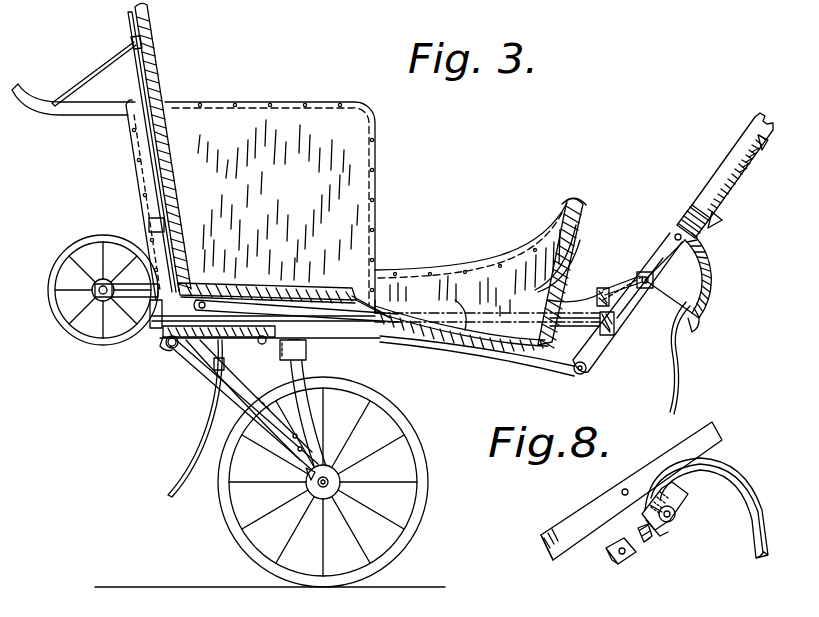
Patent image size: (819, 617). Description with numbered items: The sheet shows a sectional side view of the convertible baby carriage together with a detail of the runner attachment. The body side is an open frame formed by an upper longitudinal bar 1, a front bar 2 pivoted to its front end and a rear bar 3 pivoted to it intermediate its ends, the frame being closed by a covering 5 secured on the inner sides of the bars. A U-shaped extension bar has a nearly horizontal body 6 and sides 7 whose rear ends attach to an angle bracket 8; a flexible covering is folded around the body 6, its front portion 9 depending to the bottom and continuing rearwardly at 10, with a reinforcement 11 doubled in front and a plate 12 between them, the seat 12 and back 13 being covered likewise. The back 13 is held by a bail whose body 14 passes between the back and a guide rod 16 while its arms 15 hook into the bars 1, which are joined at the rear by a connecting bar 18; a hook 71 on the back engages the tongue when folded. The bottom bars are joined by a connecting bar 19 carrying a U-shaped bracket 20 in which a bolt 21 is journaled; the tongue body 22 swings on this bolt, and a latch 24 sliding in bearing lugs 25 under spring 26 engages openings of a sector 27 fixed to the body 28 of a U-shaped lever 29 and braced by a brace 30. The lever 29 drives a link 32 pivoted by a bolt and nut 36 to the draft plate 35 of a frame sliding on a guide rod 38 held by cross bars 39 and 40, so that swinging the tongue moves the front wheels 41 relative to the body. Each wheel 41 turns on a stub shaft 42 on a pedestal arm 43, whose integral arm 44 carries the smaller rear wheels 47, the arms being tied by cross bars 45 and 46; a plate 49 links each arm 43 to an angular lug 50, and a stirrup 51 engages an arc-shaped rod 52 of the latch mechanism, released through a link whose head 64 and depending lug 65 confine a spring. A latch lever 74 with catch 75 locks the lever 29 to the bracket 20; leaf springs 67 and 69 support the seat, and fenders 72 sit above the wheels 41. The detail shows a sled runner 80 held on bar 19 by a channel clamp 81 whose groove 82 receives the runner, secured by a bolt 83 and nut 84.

In FIG. 3, the upper longitudinal bar 1 is at (257, 107).
In FIG. 3, the front bar 2 is at (377, 225).
In FIG. 3, the rear bar 3 is at (143, 162).
In FIG. 3, the covering 5 is at (278, 201).
In FIG. 3, the body of U-shaped bar 6 is at (578, 204).
In FIG. 3, the sides of U-shaped bar 7 is at (420, 270).
In FIG. 3, the angle bracket 8 is at (475, 273).
In FIG. 3, the front portion of covering 9 is at (556, 250).
In FIG. 3, the rearwardly extended covering portion 10 is at (470, 302).
In FIG. 3, the reinforcement 11 is at (578, 272).
In FIG. 3, the seat 12 is at (582, 245).
In FIG. 3, the back 13 is at (151, 57).
In FIG. 3, the body of bail 14 is at (132, 42).
In FIG. 3, the arms of bail 15 is at (92, 76).
In FIG. 3, the guide rod 16 is at (130, 78).
In FIG. 3, the connecting bar 18 is at (25, 85).
In FIG. 3, the connecting bar 19 is at (601, 290).
In FIG. 8, the connecting bar 19 is at (575, 527).
In FIG. 3, the U-shaped bracket 20 is at (708, 283).
In FIG. 3, the bolt 21 is at (650, 292).
In FIG. 3, the tongue body 22 is at (742, 140).
In FIG. 3, the latch 24 is at (728, 205).
In FIG. 3, the bearing lugs 25 is at (762, 148).
In FIG. 3, the coil spring 26 is at (748, 170).
In FIG. 3, the sector 27 is at (703, 282).
In FIG. 3, the body of U-shaped lever 28 is at (680, 232).
In FIG. 3, the U-shaped lever 29 is at (612, 372).
In FIG. 3, the brace 30 is at (706, 320).
In FIG. 3, the link 32 is at (535, 355).
In FIG. 3, the draft plate 35 is at (210, 340).
In FIG. 3, the bolt and nut 36 is at (246, 364).
In FIG. 3, the guide rod 38 is at (199, 300).
In FIG. 3, the cross bar 39 is at (140, 338).
In FIG. 3, the cross bar 40 is at (350, 324).
In FIG. 3, the front wheels 41 is at (427, 511).
In FIG. 3, the stub shaft 42 is at (318, 490).
In FIG. 3, the pedestal arm 43 is at (300, 372).
In FIG. 3, the pedestal arm 44 is at (126, 300).
In FIG. 3, the cross bar 45 is at (316, 462).
In FIG. 3, the cross bar 46 is at (95, 286).
In FIG. 3, the rear wheels 47 is at (55, 306).
In FIG. 3, the plate 49 is at (244, 390).
In FIG. 3, the angular lug 50 is at (170, 348).
In FIG. 3, the stirrup 51 is at (225, 362).
In FIG. 3, the arc-shaped rod 52 is at (196, 452).
In FIG. 3, the head 64 is at (624, 340).
In FIG. 3, the depending lug 65 is at (600, 324).
In FIG. 3, the leaf springs 67 is at (244, 290).
In FIG. 3, the leaf springs 69 is at (320, 290).
In FIG. 3, the hook 71 is at (148, 220).
In FIG. 3, the fenders 72 is at (281, 292).
In FIG. 3, the latch lever 74 is at (703, 294).
In FIG. 3, the catch 75 is at (688, 334).
In FIG. 8, the sled runners 80 is at (742, 512).
In FIG. 8, the clamp 81 is at (672, 532).
In FIG. 8, the transverse groove 82 is at (646, 544).
In FIG. 8, the bolt 83 is at (676, 514).
In FIG. 8, the nut 84 is at (615, 562).